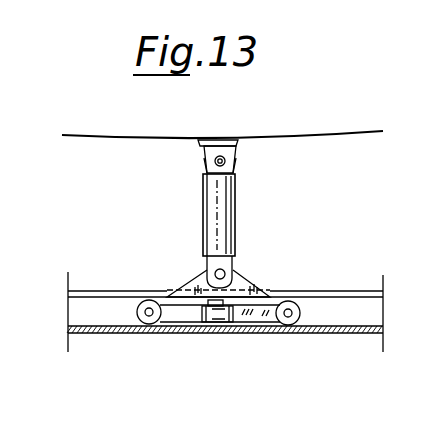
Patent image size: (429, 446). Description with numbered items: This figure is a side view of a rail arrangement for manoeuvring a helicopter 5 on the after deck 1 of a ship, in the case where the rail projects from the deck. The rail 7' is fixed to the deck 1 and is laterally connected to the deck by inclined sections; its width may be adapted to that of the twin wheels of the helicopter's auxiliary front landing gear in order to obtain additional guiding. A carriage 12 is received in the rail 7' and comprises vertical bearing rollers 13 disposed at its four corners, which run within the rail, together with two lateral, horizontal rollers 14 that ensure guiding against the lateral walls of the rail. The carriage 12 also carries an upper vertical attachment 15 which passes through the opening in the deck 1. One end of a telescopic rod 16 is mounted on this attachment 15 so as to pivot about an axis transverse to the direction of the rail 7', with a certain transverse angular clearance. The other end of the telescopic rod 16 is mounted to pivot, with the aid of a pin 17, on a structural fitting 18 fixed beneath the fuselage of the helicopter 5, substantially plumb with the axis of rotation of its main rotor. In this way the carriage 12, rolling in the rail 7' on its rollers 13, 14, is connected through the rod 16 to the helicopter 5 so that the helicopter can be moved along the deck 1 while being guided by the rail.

The after deck 1 is at (85, 324).
The helicopter 5 is at (328, 139).
The rail 7' is at (225, 275).
The carriage 12 is at (257, 312).
The vertical bearing rollers 13 is at (140, 306).
The lateral horizontal rollers 14 is at (200, 310).
The upper vertical attachment 15 is at (202, 282).
The telescopic rod 16 is at (222, 219).
The pin 17 is at (226, 162).
The structural fitting 18 is at (202, 148).